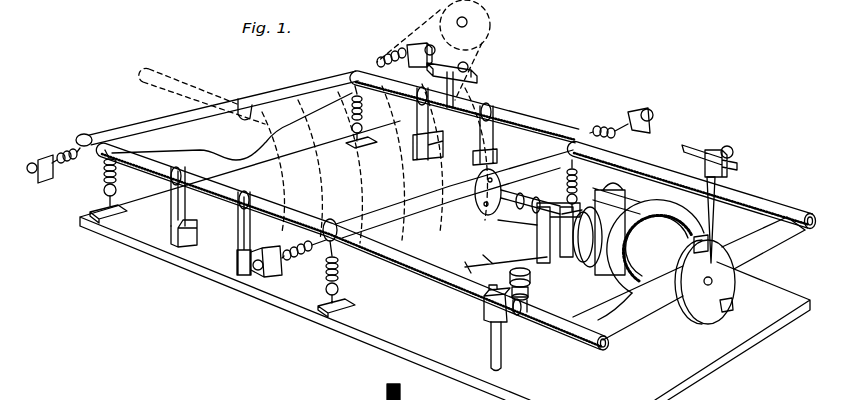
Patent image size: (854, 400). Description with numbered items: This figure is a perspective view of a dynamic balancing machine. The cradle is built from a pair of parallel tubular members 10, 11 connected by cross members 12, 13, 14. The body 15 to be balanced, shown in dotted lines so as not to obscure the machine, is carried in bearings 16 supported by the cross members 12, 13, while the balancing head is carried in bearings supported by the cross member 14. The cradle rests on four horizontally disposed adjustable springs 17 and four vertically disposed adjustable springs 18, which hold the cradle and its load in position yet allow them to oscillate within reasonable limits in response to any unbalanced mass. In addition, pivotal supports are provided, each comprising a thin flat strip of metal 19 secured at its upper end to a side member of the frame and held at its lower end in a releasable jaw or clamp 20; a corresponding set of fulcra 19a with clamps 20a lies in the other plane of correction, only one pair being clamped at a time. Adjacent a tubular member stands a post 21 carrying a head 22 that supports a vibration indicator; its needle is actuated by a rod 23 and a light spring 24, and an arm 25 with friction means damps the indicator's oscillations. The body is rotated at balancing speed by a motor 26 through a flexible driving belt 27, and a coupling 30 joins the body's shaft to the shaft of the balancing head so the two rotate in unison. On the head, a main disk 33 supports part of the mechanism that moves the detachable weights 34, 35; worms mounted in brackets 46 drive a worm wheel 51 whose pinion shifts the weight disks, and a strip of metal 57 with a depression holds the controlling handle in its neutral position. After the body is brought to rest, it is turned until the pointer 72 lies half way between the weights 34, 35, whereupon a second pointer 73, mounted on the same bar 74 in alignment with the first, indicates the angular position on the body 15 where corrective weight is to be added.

The tubular member 10 is at (602, 347).
The tubular member 11 is at (755, 198).
The cross member 12 is at (285, 88).
The cross member 13 is at (448, 195).
The cross member 14 is at (652, 313).
The body to be balanced 15 is at (300, 178).
The bearings 16 is at (242, 99).
The horizontally disposed adjustable spring 17 is at (65, 155).
The vertically disposed adjustable spring 18 is at (110, 178).
The flat strip of metal 19 is at (177, 210).
The fulcra 19a is at (243, 233).
The releasable jaw or clamp 20 is at (188, 240).
The clamps 20a is at (266, 276).
The post 21 is at (507, 355).
The head 22 is at (485, 308).
The rod 23 is at (532, 289).
The light spring 24 is at (530, 293).
The arm 25 is at (519, 315).
The motor 26 is at (483, 27).
The flexible driving belt 27 is at (423, 32).
The coupling 30 is at (496, 185).
The main disk 33 is at (652, 200).
The weight 34 is at (697, 237).
The weight 35 is at (728, 307).
The brackets 46 is at (432, 395).
The worm wheel 51 is at (385, 392).
The strip of metal 57 is at (493, 251).
The pointer 72 is at (722, 248).
The second pointer 73 is at (453, 98).
The bar 74 is at (473, 78).